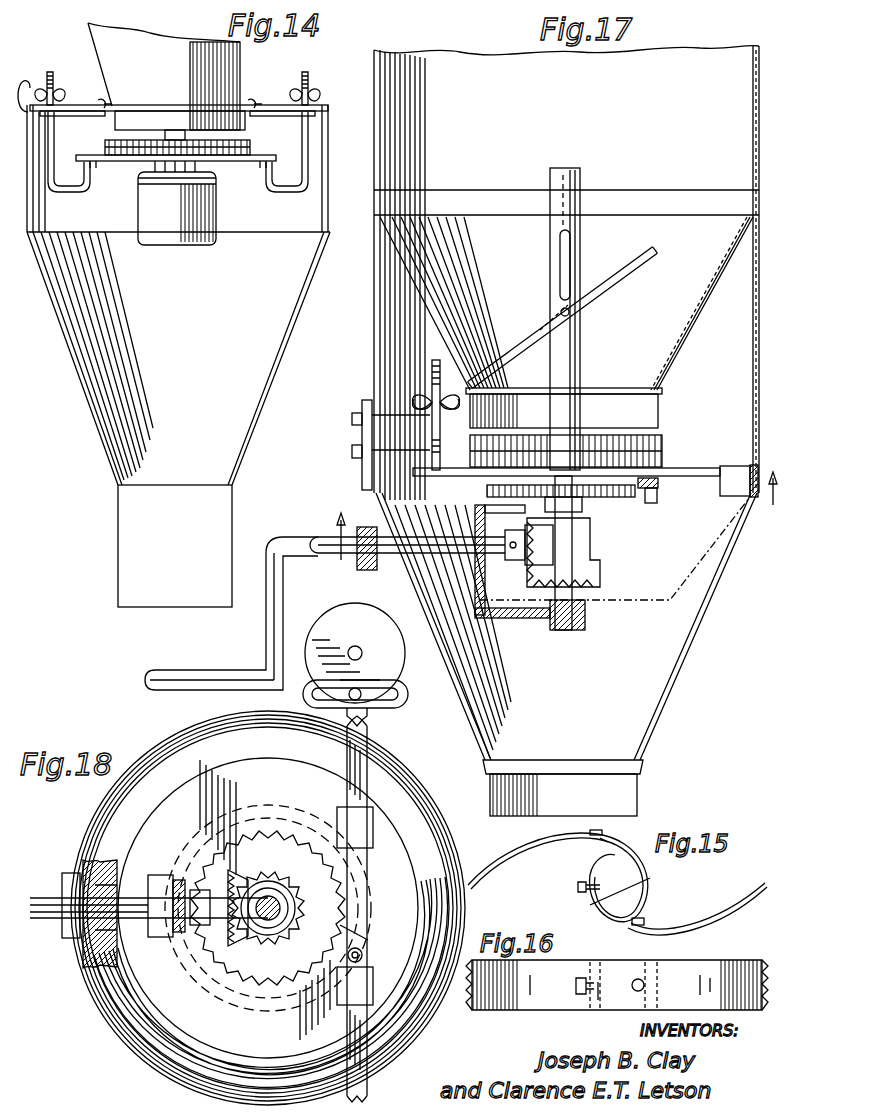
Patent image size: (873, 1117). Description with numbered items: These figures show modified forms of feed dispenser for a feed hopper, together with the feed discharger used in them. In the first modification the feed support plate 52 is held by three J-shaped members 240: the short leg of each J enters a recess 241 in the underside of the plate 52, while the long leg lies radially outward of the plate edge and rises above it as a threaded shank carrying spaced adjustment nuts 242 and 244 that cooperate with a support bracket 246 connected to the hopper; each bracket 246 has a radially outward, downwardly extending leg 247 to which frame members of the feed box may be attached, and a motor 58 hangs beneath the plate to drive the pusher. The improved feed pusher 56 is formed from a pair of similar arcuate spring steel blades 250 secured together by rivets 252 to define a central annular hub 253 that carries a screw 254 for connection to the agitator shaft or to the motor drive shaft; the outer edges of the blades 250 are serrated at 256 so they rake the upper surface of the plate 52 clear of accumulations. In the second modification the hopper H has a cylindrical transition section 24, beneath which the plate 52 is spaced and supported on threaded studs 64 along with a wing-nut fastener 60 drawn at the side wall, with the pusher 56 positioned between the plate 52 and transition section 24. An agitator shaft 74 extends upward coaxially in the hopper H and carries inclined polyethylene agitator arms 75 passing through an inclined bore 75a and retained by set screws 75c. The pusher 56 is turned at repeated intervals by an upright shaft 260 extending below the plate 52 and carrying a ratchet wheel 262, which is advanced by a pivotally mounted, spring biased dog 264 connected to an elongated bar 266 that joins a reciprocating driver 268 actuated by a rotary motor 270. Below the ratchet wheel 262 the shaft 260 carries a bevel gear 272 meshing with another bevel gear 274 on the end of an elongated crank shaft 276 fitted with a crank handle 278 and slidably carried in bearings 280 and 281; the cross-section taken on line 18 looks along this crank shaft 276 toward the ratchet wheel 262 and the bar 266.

In FIG. 17, the transition section 24 is at (660, 412).
In FIG. 18, the transition section 24 is at (222, 1004).
In FIG. 14, the feed support plate 52 is at (268, 157).
In FIG. 17, the feed support plate 52 is at (690, 470).
In FIG. 18, the feed support plate 52 is at (270, 1055).
In FIG. 14, the feed pusher 56 is at (148, 145).
In FIG. 17, the feed pusher 56 is at (664, 444).
In FIG. 15, the feed pusher 56 is at (645, 868).
In FIG. 14, the motor 58 is at (202, 244).
In FIG. 17, the wing nut bolt 60 is at (430, 402).
In FIG. 17, the threaded studs 64 is at (360, 437).
In FIG. 17, the agitator shaft 74 is at (580, 360).
In FIG. 17, the agitator arms 75 is at (572, 262).
In FIG. 17, the inclined bore 75a is at (580, 316).
In FIG. 17, the set screws 75c is at (568, 316).
In FIG. 17, the hopper means H is at (708, 292).
In FIG. 17, the section line 18 is at (551, 534).
In FIG. 14, the J-shaped support members 240 is at (68, 192).
In FIG. 14, the recess 241 is at (95, 166).
In FIG. 14, the adjustment nut 242 is at (60, 116).
In FIG. 14, the adjustment nut 244 is at (54, 82).
In FIG. 14, the support bracket 246 is at (100, 102).
In FIG. 14, the downwardly extending leg 247 is at (24, 88).
In FIG. 15, the arcuate sheet metal blades 250 is at (496, 852).
In FIG. 16, the arcuate sheet metal blades 250 is at (700, 968).
In FIG. 15, the rivets 252 is at (592, 840).
In FIG. 16, the rivets 252 is at (638, 979).
In FIG. 15, the annular hub 253 is at (592, 904).
In FIG. 16, the annular hub 253 is at (604, 1002).
In FIG. 15, the screw 254 is at (578, 887).
In FIG. 16, the screw 254 is at (583, 996).
In FIG. 16, the serrations 256 is at (766, 966).
In FIG. 17, the upright shaft 260 is at (572, 490).
In FIG. 18, the upright shaft 260 is at (276, 896).
In FIG. 17, the ratchet wheel 262 is at (575, 497).
In FIG. 18, the ratchet wheel 262 is at (262, 990).
In FIG. 17, the dog 264 is at (658, 500).
In FIG. 18, the dog 264 is at (364, 950).
In FIG. 17, the elongated bar 266 is at (660, 484).
In FIG. 18, the elongated bar 266 is at (370, 772).
In FIG. 17, the reciprocating driver 268 is at (402, 704).
In FIG. 17, the rotary motor 270 is at (385, 668).
In FIG. 17, the bevel gear 272 is at (592, 566).
In FIG. 18, the bevel gear 272 is at (298, 908).
In FIG. 17, the bevel gear 274 is at (532, 526).
In FIG. 18, the bevel gear 274 is at (240, 872).
In FIG. 17, the crank shaft 276 is at (320, 540).
In FIG. 18, the crank shaft 276 is at (44, 890).
In FIG. 17, the crank handle 278 is at (214, 680).
In FIG. 17, the bearing 280 is at (374, 570).
In FIG. 18, the bearing 280 is at (62, 920).
In FIG. 17, the bearing 281 is at (514, 562).
In FIG. 18, the bearing 281 is at (170, 937).